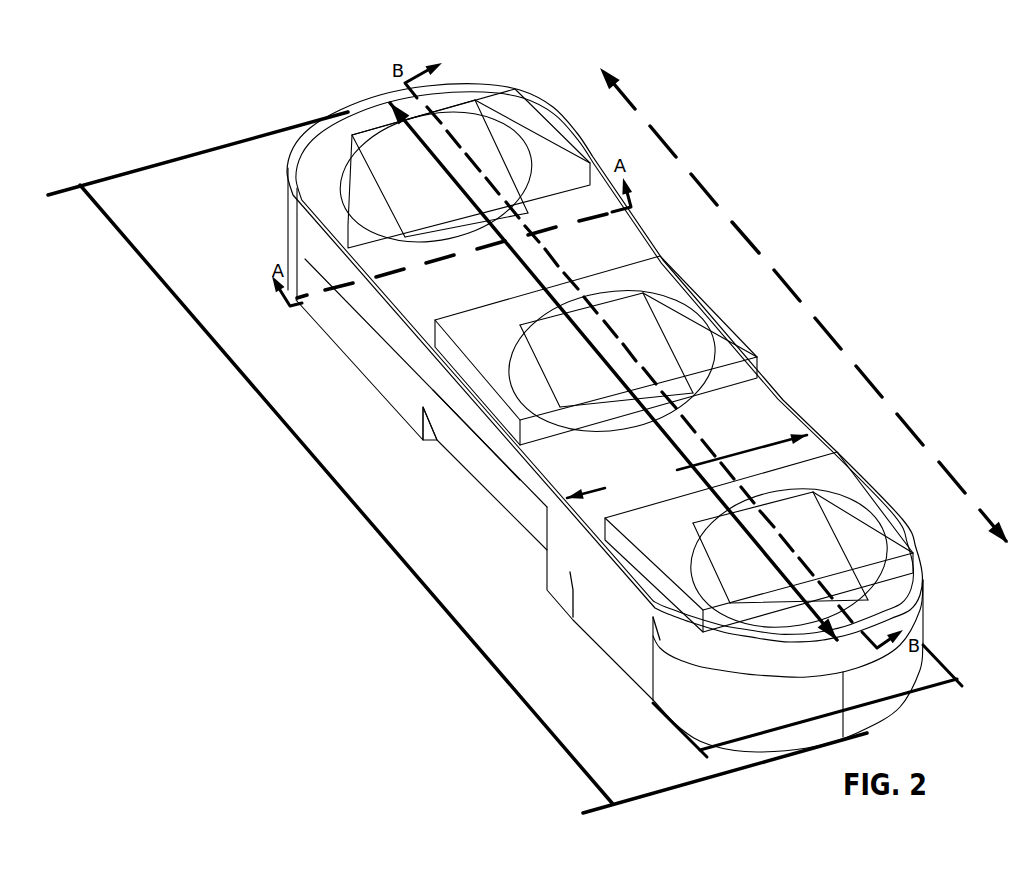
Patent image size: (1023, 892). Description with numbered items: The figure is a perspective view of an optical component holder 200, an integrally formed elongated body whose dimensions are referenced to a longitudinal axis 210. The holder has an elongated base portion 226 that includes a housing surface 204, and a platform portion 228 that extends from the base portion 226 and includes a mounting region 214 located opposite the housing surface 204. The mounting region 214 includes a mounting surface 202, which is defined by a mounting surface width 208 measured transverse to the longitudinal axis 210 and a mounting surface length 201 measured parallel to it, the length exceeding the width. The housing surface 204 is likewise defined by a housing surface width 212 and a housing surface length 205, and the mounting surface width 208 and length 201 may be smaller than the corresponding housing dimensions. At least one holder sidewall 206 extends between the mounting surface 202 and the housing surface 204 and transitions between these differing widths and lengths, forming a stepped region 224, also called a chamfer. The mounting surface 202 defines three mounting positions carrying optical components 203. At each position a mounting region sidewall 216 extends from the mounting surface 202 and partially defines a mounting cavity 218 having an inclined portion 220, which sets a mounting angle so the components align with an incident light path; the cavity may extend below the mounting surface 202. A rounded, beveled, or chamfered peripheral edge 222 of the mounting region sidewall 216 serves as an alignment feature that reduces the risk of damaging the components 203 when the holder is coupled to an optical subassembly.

The optical component holder 200 is at (795, 158).
The mounting surface length 201 is at (639, 364).
The mounting surface 202 is at (604, 363).
The optical components 203 is at (845, 331).
The housing surface 204 is at (400, 433).
The housing surface length 205 is at (352, 503).
The holder sidewall 206 is at (474, 479).
The mounting surface width 208 is at (687, 466).
The longitudinal axis 210 is at (789, 275).
The housing surface width 212 is at (900, 694).
The mounting region 214 is at (512, 86).
The mounting region sidewall 216 is at (683, 294).
The mounting cavity 218 is at (697, 341).
The inclined portion 220 is at (510, 162).
The peripheral edge 222 is at (338, 218).
The stepped region 224 is at (518, 477).
The base portion 226 is at (570, 571).
The platform portion 228 is at (660, 617).